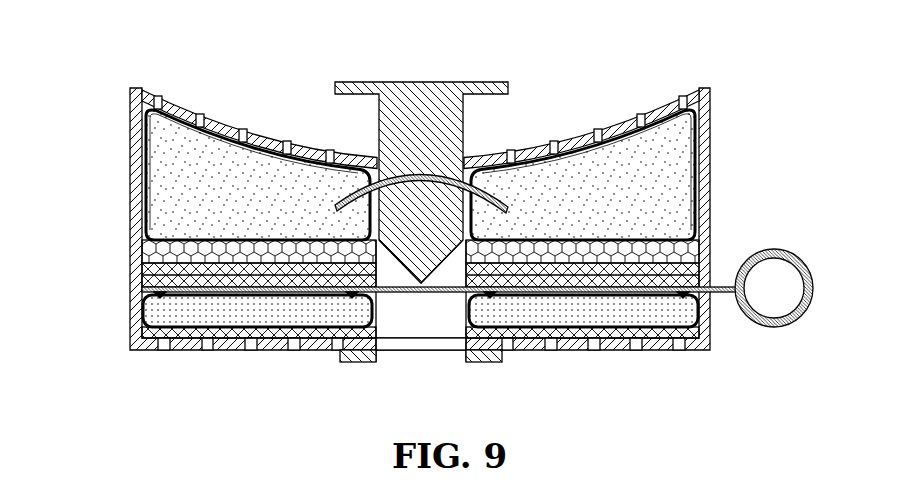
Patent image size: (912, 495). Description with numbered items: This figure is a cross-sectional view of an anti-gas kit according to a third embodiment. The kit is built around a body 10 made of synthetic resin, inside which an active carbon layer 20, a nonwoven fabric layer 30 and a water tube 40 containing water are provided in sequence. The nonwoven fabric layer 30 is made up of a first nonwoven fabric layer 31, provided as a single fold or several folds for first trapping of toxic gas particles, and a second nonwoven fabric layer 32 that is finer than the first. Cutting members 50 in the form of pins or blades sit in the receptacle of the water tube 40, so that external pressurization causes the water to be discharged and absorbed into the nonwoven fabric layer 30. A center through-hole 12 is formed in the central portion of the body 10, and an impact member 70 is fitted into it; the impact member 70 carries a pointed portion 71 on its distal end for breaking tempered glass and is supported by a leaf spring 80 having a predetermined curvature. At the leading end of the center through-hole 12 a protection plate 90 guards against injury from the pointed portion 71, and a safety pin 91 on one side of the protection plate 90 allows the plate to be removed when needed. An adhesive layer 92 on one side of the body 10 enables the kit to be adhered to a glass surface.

The body 10 is at (714, 166).
The center through-hole 12 is at (365, 222).
The active carbon layer 20 is at (185, 152).
The nonwoven fabric layer 30 is at (355, 281).
The first nonwoven fabric layer 31 is at (162, 334).
The second nonwoven fabric layer 32 is at (160, 258).
The water tube 40 is at (644, 314).
The cutting members 50 is at (708, 298).
The impact member 70 is at (487, 84).
The pointed portion 71 is at (421, 272).
The leaf spring 80 is at (490, 190).
The protection plate 90 is at (447, 293).
The safety pin 91 is at (804, 256).
The adhesive layer 92 is at (352, 363).